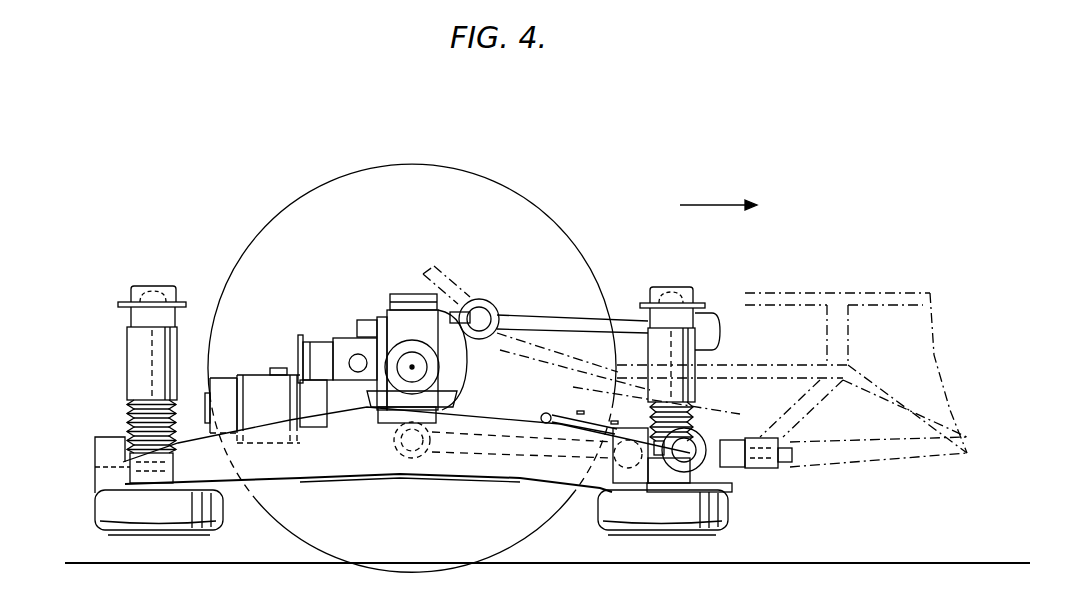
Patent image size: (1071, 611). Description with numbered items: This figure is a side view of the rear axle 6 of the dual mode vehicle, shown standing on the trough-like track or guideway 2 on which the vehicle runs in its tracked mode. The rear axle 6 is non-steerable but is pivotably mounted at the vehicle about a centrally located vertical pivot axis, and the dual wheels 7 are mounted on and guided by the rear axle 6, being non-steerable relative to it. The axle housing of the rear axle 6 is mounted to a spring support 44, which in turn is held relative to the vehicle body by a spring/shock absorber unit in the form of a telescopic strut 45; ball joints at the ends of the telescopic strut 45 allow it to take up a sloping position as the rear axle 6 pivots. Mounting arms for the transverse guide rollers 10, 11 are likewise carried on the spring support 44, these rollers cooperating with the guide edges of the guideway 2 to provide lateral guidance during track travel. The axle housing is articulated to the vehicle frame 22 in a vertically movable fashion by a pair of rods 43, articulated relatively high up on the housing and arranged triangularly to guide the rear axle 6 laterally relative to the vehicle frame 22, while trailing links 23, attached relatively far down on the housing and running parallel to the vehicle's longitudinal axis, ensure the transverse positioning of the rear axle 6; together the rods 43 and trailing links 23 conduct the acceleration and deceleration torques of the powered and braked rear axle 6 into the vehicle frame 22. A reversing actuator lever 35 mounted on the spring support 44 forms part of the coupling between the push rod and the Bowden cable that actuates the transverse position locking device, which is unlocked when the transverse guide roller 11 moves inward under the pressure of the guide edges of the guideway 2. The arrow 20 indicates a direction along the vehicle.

The guideway 2 is at (807, 563).
The rear axle 6 is at (378, 298).
The dual wheels 7 is at (549, 224).
The transverse guide roller 10 is at (214, 517).
The transverse guide roller 11 is at (726, 511).
The direction of travel arrow 20 is at (721, 205).
The vehicle frame 22 is at (771, 470).
The trailing link 23 is at (497, 460).
The reversing actuator lever 35 is at (558, 410).
The rod 43 is at (574, 318).
The spring support 44 is at (545, 482).
The telescopic strut 45 is at (688, 389).